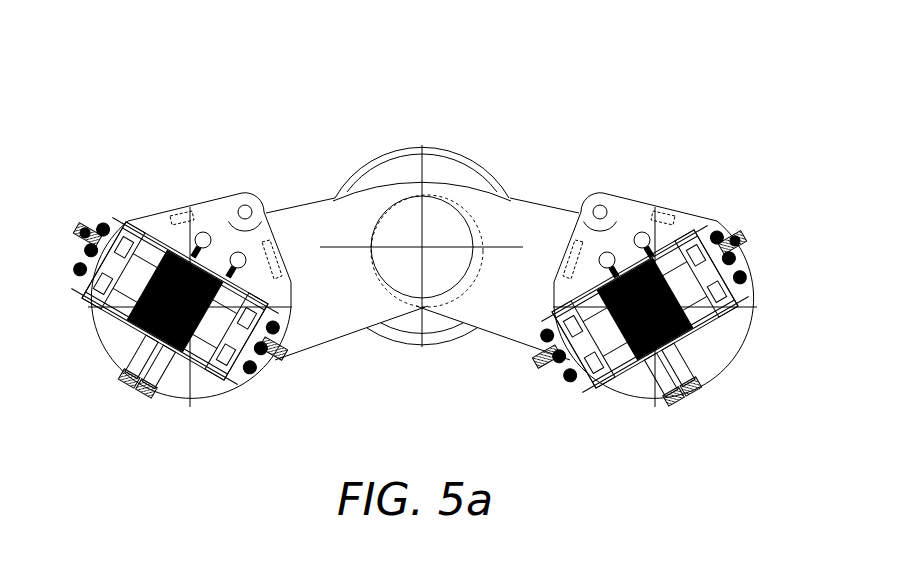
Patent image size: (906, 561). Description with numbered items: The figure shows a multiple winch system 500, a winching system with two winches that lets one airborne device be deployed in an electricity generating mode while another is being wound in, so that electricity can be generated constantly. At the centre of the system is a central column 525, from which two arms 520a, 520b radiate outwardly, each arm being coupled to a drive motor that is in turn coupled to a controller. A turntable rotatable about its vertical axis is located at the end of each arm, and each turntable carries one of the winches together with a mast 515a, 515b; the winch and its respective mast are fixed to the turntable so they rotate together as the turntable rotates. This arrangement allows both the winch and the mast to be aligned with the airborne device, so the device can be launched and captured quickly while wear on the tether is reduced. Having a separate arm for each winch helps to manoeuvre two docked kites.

The multiple winch system 500 is at (556, 77).
The mast 515a is at (237, 212).
The mast 515b is at (597, 208).
The arm 520a is at (322, 332).
The arm 520b is at (507, 331).
The central column 525 is at (415, 211).